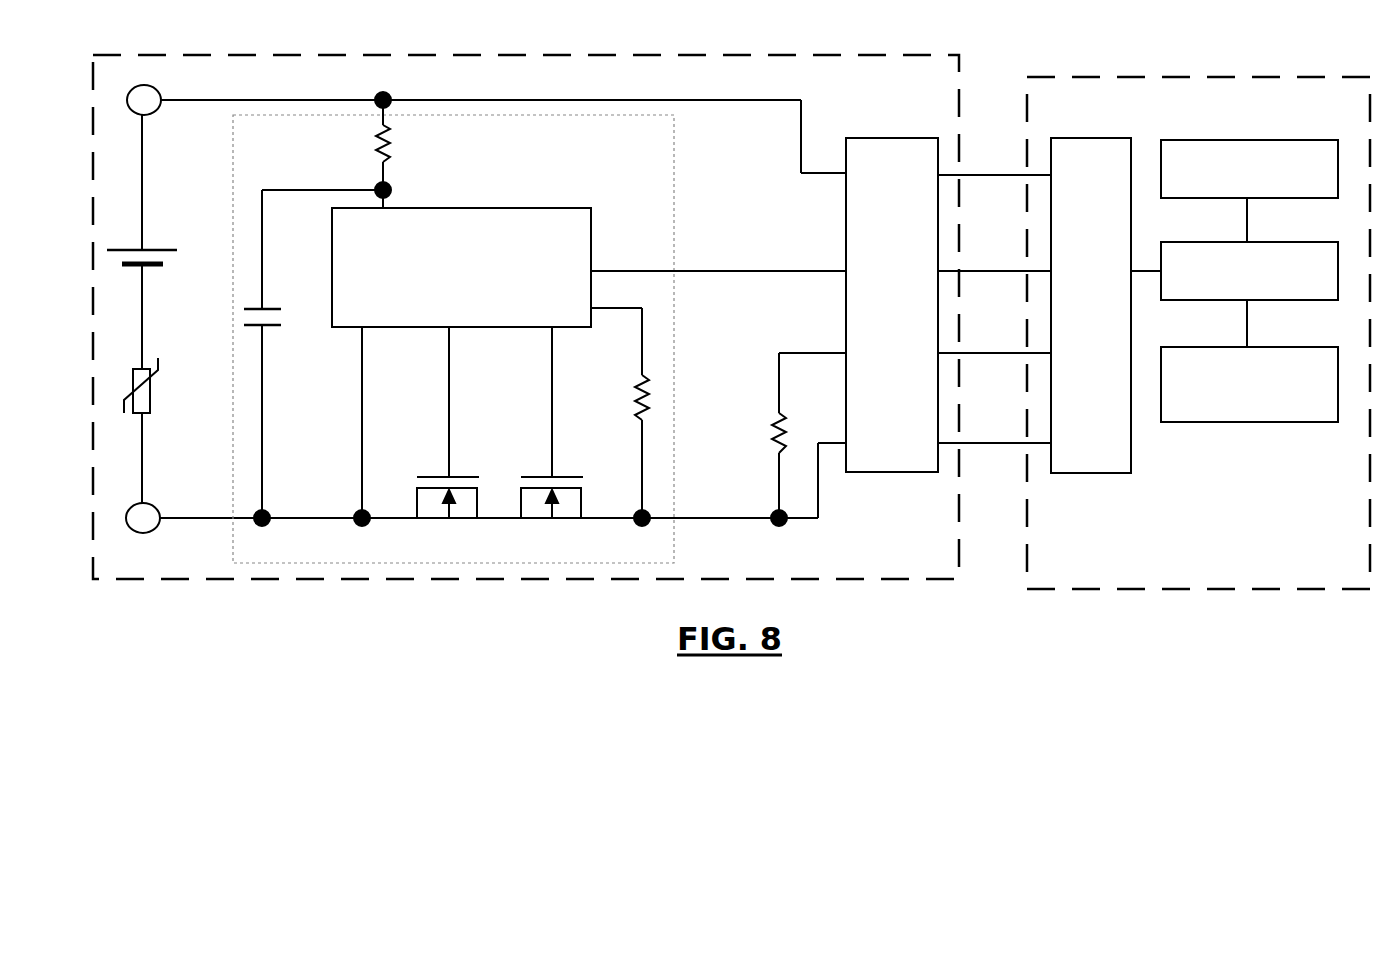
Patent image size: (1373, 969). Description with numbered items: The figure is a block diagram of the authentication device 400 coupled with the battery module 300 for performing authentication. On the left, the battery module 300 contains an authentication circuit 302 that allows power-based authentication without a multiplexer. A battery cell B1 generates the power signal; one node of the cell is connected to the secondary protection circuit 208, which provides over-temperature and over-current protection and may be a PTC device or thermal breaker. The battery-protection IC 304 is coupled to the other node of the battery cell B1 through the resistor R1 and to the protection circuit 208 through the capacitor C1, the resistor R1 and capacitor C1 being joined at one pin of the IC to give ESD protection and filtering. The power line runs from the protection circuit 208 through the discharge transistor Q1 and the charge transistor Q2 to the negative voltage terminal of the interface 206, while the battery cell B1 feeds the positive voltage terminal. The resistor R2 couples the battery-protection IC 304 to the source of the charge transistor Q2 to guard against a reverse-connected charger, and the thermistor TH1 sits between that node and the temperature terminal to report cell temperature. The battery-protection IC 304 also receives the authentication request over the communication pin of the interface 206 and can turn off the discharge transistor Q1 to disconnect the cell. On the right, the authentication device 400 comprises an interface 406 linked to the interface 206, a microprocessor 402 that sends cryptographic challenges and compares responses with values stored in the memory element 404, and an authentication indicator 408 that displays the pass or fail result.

The battery module 300 is at (882, 53).
The authentication circuit 302 is at (676, 200).
The battery-protection IC 304 is at (470, 206).
The interface 206 is at (870, 136).
The secondary protection circuit 208 is at (152, 402).
The authentication device 400 is at (1295, 75).
The microprocessor 402 is at (1278, 240).
The memory element 404 is at (1280, 138).
The interface 406 is at (1100, 135).
The authentication indicator 408 is at (1285, 345).
The battery cell B1 is at (160, 263).
The capacitor C1 is at (275, 358).
The resistor R1 is at (398, 145).
The resistor R2 is at (625, 450).
The discharge transistor Q1 is at (448, 437).
The charge transistor Q2 is at (552, 437).
The thermistor TH1 is at (783, 439).